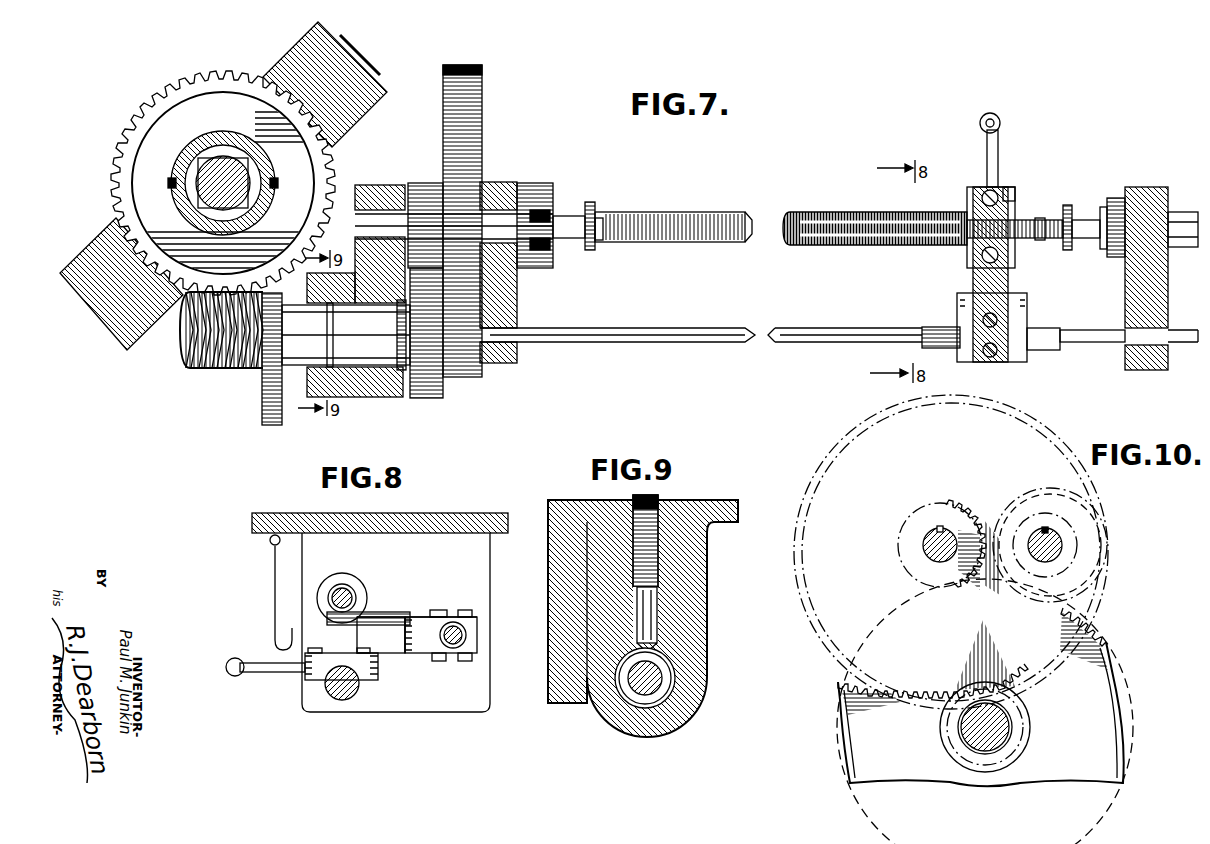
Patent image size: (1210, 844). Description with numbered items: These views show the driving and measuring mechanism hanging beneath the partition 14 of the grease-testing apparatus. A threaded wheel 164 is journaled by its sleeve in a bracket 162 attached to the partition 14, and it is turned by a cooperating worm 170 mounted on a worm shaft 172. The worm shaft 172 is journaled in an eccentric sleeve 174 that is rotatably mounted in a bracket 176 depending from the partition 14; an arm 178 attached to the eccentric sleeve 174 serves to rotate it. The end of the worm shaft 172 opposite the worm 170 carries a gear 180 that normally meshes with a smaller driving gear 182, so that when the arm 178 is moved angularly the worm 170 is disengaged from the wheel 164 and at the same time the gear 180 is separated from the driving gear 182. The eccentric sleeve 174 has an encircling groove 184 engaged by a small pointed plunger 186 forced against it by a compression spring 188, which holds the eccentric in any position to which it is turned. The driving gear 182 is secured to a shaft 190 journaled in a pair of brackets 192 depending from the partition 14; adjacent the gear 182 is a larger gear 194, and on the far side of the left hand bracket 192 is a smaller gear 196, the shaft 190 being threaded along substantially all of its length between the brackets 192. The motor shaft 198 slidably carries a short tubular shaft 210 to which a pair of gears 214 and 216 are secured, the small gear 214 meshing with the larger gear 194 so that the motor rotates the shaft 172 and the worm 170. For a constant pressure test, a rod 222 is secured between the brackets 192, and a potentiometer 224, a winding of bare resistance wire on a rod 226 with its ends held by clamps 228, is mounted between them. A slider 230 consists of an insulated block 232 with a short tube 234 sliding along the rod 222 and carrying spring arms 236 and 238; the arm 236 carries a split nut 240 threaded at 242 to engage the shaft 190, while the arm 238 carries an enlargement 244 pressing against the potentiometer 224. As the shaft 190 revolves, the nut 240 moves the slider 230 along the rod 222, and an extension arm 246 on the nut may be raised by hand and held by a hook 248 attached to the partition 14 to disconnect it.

In FIG. 8, the partition 14 is at (440, 513).
In FIG. 7, the bracket 162 is at (117, 348).
In FIG. 7, the threaded wheel 164 is at (163, 101).
In FIG. 7, the worm 170 is at (220, 372).
In FIG. 7, the worm shaft 172 is at (300, 350).
In FIG. 9, the worm shaft 172 is at (640, 700).
In FIG. 10, the worm shaft 172 is at (1062, 545).
In FIG. 7, the eccentric sleeve 174 is at (400, 372).
In FIG. 9, the eccentric sleeve 174 is at (676, 675).
In FIG. 7, the bracket 176 is at (378, 195).
In FIG. 9, the bracket 176 is at (700, 630).
In FIG. 7, the arm 178 is at (277, 425).
In FIG. 7, the gear 180 is at (430, 398).
In FIG. 10, the gear 180 is at (1095, 530).
In FIG. 7, the driving gear 182 is at (421, 195).
In FIG. 10, the driving gear 182 is at (962, 512).
In FIG. 7, the encircling groove 184 is at (360, 396).
In FIG. 9, the pointed plunger 186 is at (660, 615).
In FIG. 9, the compression spring 188 is at (658, 573).
In FIG. 7, the shaft 190 is at (688, 212).
In FIG. 8, the shaft 190 is at (343, 700).
In FIG. 10, the shaft 190 is at (933, 553).
In FIG. 7, the brackets 192 is at (497, 193).
In FIG. 8, the brackets 192 is at (437, 712).
In FIG. 7, the larger gear 194 is at (482, 125).
In FIG. 10, the larger gear 194 is at (1026, 445).
In FIG. 7, the smaller gear 196 is at (550, 197).
In FIG. 10, the motor shaft 198 is at (1000, 725).
In FIG. 10, the tubular shaft 210 is at (1005, 735).
In FIG. 10, the small gear 214 is at (1018, 698).
In FIG. 10, the gear 216 is at (1108, 632).
In FIG. 7, the rod 222 is at (580, 342).
In FIG. 8, the rod 222 is at (463, 635).
In FIG. 7, the potentiometer 224 is at (598, 248).
In FIG. 8, the potentiometer 224 is at (350, 592).
In FIG. 7, the rod 226 is at (535, 192).
In FIG. 8, the rod 226 is at (356, 600).
In FIG. 7, the clamps 228 is at (590, 205).
In FIG. 8, the clamps 228 is at (342, 573).
In FIG. 7, the slider 230 is at (941, 329).
In FIG. 8, the slider 230 is at (381, 635).
In FIG. 7, the insulated block 232 is at (1028, 307).
In FIG. 8, the insulated block 232 is at (427, 655).
In FIG. 7, the tube 234 is at (1052, 336).
In FIG. 8, the tube 234 is at (463, 630).
In FIG. 7, the spring arm 236 is at (985, 192).
In FIG. 8, the spring arm 236 is at (393, 656).
In FIG. 7, the spring arm 238 is at (1005, 276).
In FIG. 8, the spring arm 238 is at (402, 616).
In FIG. 7, the split nut 240 is at (1015, 258).
In FIG. 8, the split nut 240 is at (368, 680).
In FIG. 8, the threads 242 is at (342, 653).
In FIG. 7, the enlargement 244 is at (1010, 190).
In FIG. 8, the enlargement 244 is at (355, 614).
In FIG. 7, the extension arm 246 is at (998, 135).
In FIG. 8, the extension arm 246 is at (255, 672).
In FIG. 8, the hook 248 is at (273, 613).